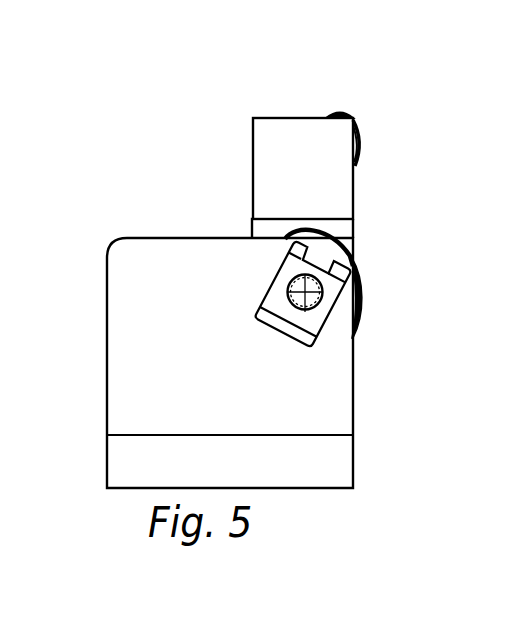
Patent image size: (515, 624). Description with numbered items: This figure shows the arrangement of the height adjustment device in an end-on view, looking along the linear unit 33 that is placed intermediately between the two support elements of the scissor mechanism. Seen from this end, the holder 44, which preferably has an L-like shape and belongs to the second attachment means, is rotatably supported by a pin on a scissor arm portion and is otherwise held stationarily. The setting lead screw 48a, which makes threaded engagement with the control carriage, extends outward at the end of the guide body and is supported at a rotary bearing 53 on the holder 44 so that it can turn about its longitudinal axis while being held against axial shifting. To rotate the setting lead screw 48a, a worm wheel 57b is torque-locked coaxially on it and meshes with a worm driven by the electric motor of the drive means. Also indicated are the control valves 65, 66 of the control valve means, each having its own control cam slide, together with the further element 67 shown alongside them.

The linear unit 33 is at (364, 221).
The holder 44 is at (338, 407).
The setting lead screw 48a is at (315, 310).
The rotary bearing 53 is at (278, 289).
The worm wheel 57b is at (362, 275).
The control valve 65 is at (359, 165).
The control valve 66 is at (356, 143).
The latch element 67 is at (355, 143).